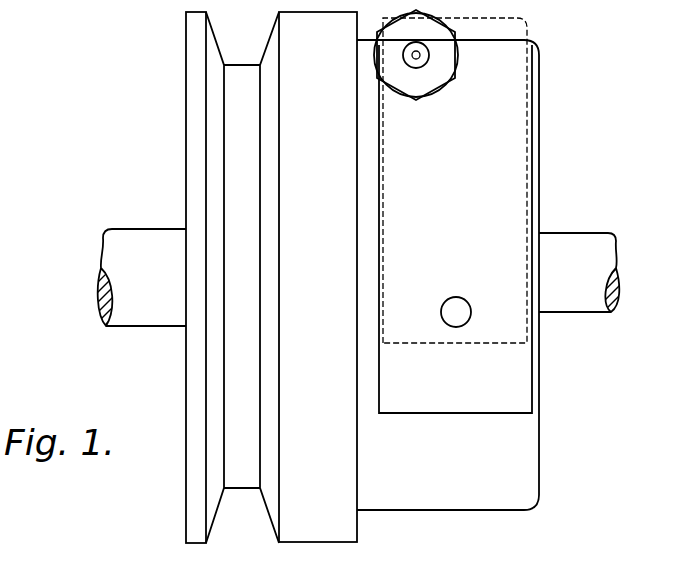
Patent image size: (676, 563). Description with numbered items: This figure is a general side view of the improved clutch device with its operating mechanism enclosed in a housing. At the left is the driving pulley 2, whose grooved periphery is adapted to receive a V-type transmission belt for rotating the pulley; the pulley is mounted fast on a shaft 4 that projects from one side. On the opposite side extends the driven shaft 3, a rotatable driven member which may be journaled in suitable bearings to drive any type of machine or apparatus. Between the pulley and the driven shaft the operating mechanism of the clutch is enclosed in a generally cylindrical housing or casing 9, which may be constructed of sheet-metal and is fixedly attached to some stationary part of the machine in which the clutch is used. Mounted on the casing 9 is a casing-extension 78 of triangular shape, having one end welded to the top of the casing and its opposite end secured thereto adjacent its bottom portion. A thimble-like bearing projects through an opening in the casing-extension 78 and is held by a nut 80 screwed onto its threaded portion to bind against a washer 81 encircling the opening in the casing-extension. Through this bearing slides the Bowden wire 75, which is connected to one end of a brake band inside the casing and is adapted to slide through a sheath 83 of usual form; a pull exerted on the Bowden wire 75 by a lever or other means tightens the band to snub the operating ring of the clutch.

The driving pulley 2 is at (198, 152).
The driven shaft 3 is at (587, 281).
The shaft 4 is at (138, 289).
The housing or casing 9 is at (448, 275).
The casing-extension 78 is at (453, 215).
The nut 80 is at (440, 90).
The washer 81 is at (456, 77).
The sheath 83 is at (427, 58).
The Bowden wire 75 is at (420, 55).